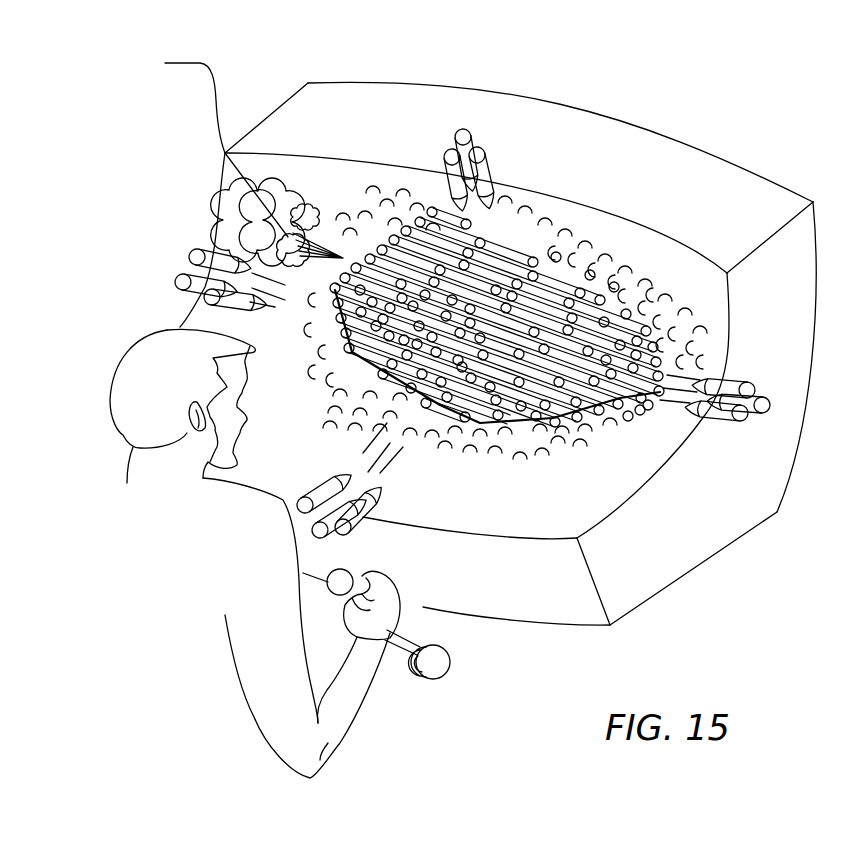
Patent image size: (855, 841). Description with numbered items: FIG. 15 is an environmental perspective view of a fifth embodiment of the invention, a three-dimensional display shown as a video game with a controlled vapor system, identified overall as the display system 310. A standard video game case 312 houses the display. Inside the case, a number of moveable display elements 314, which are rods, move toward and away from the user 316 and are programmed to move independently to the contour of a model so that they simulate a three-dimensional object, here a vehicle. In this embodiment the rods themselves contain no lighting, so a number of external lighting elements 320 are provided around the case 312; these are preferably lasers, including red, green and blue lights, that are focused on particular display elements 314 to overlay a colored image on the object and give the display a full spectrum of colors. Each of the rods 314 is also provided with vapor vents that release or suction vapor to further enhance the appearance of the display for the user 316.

The virtual object display system 310 is at (123, 237).
The video game case 312 is at (410, 87).
The moveable display elements 314 is at (523, 253).
The user 316 is at (237, 588).
The external lighting elements 320 is at (180, 245).